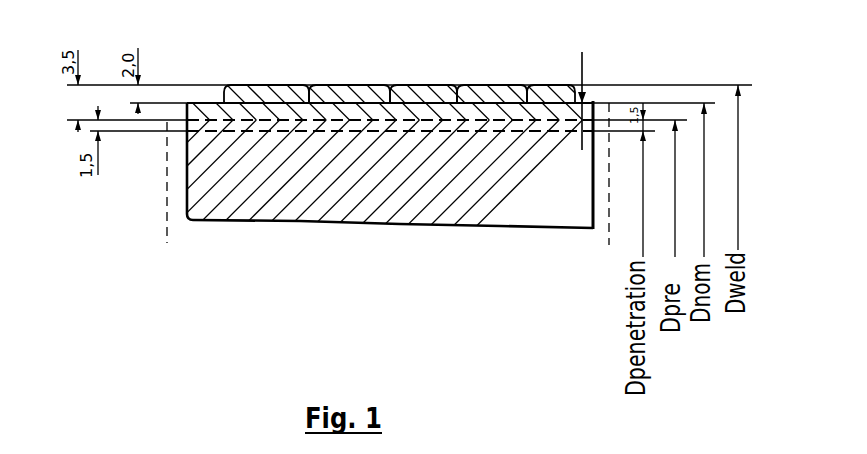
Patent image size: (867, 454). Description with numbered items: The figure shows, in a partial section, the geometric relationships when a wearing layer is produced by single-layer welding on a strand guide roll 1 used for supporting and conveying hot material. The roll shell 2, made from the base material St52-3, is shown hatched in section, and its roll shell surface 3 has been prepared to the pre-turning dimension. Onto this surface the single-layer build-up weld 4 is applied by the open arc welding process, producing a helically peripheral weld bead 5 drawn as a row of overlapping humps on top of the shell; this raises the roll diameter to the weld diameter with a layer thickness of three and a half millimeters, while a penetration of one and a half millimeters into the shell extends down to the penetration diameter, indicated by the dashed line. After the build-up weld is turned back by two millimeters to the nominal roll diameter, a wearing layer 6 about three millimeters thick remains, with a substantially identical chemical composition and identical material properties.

The strand guide roll 1 is at (251, 238).
The roll shell 2 is at (343, 195).
The roll shell surface 3 is at (600, 113).
The single-layer build-up weld 4 is at (440, 79).
The weld bead 5 is at (275, 88).
The wearing layer 6 is at (577, 68).